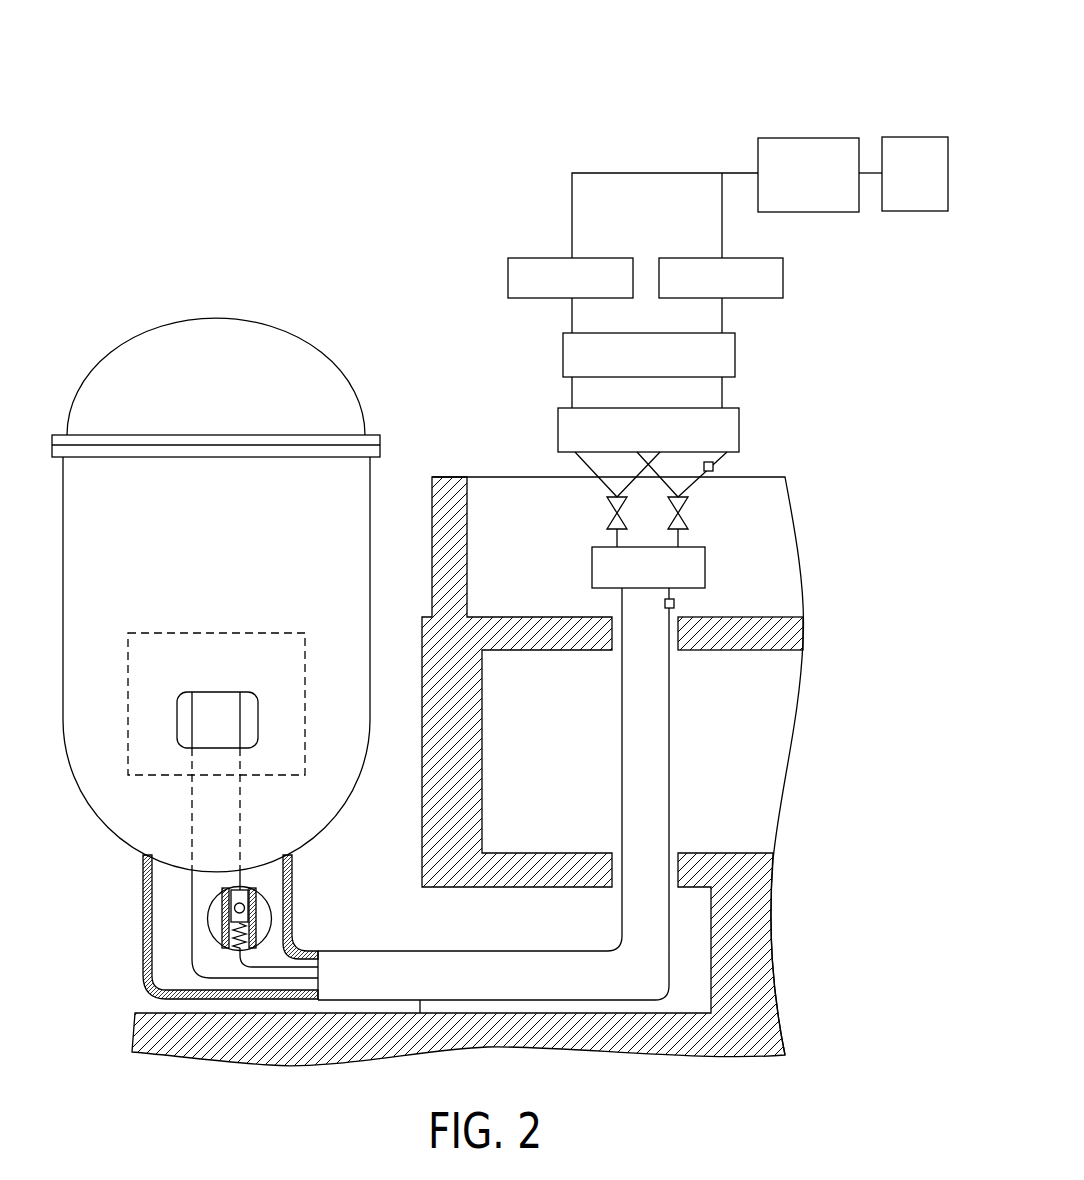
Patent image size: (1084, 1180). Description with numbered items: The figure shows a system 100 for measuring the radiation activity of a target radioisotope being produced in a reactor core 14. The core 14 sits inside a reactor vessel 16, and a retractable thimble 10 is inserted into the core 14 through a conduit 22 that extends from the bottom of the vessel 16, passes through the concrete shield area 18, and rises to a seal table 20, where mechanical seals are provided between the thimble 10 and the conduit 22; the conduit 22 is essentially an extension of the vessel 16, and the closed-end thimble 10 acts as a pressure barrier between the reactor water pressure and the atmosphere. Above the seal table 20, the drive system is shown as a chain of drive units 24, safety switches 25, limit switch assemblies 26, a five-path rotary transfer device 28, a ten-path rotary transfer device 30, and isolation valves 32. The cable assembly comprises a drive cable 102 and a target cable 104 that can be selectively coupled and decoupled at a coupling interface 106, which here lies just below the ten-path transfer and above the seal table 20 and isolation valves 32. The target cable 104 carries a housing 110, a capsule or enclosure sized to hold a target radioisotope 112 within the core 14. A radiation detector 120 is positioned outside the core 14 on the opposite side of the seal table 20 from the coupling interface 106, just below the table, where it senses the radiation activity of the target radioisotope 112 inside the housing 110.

The system 100 is at (528, 84).
The drive cable 102 is at (830, 380).
The drive units 24 is at (903, 137).
The safety switches 25 is at (758, 148).
The limit switch assemblies 26 is at (508, 270).
The 5-path rotary transfer devices 28 is at (735, 350).
The 10-path rotary transfer devices 30 is at (739, 425).
The coupling interface 106 is at (713, 466).
The isolation valves 32 is at (607, 505).
The seal table 20 is at (705, 568).
The radiation detector 120 is at (674, 603).
The conduits 22 is at (672, 757).
The concrete shield area 18 is at (542, 819).
The reactor vessel 16 is at (155, 829).
The reactor core 14 is at (173, 633).
The retractable thimble 10 is at (240, 875).
The housing 110 is at (228, 900).
The target radioisotope 112 is at (244, 908).
The target cable 104 is at (218, 951).